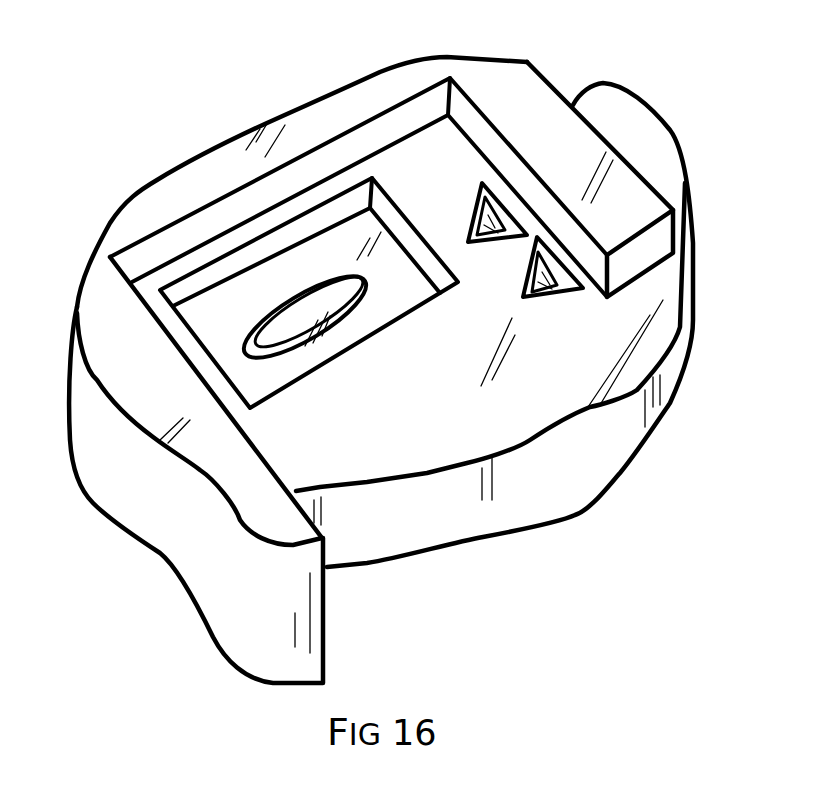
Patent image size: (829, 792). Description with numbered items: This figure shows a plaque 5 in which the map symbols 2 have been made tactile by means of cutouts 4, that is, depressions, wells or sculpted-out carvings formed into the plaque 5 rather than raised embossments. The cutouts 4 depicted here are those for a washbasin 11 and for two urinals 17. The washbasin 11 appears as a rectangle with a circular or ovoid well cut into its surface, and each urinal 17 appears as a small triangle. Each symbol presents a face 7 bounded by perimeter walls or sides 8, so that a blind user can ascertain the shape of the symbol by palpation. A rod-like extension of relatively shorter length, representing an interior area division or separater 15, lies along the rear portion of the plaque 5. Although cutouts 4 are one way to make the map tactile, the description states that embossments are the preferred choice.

The map symbol 2 is at (480, 185).
The cutouts 4 is at (217, 338).
The plaque 5 is at (580, 453).
The face 7 is at (233, 352).
The perimeter walls or sides 8 is at (180, 298).
The washbasin symbol 11 is at (310, 363).
The interior area division or separater 15 is at (543, 128).
The urinal symbol 17 is at (572, 278).